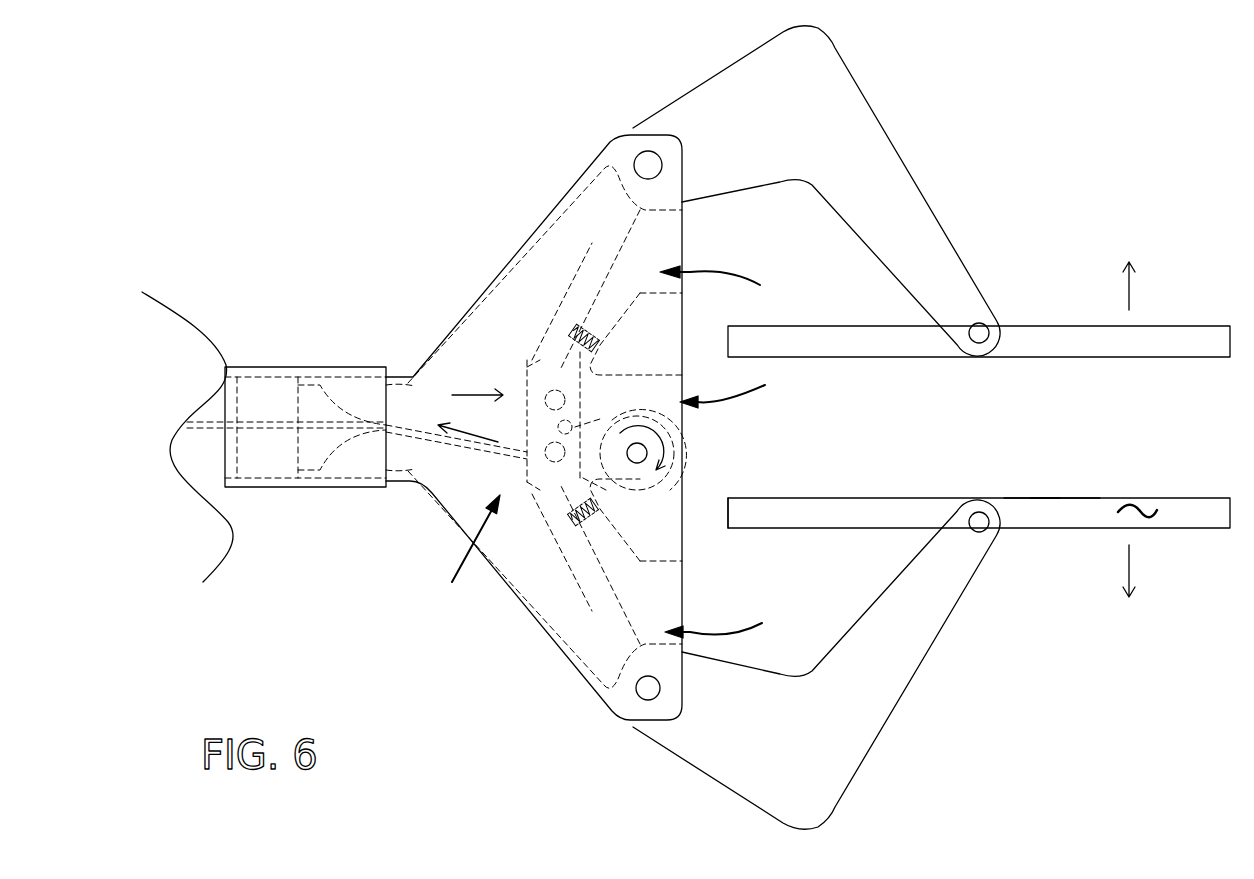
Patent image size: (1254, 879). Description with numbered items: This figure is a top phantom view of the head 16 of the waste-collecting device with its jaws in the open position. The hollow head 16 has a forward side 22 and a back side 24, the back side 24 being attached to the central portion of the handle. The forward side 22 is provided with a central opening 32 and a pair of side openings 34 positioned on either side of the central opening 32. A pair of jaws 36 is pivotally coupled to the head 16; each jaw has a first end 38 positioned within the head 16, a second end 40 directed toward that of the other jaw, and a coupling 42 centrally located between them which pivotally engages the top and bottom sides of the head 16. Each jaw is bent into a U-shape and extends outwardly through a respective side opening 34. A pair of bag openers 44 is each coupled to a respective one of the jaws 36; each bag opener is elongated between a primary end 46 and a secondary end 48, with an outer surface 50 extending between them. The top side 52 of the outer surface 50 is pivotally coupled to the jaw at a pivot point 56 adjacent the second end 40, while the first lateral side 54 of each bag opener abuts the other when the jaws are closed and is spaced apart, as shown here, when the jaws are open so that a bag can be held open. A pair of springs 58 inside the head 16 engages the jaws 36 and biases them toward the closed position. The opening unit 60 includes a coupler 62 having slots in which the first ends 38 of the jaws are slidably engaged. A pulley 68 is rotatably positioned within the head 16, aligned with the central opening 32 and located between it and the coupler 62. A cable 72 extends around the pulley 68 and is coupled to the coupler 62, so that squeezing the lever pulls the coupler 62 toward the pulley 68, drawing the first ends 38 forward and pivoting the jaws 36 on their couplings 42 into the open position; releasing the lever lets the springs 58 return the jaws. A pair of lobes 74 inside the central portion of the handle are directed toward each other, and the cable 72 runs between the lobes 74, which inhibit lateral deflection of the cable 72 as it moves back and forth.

The head 16 is at (582, 177).
The forward side 22 is at (682, 580).
The back side 24 is at (383, 462).
The central opening 32 is at (744, 383).
The side openings 34 is at (739, 452).
The jaws 36 is at (880, 97).
The first end 38 is at (528, 385).
The second end 40 is at (993, 358).
The coupling 42 is at (648, 150).
The bag openers 44 is at (1223, 325).
The primary end 46 is at (730, 515).
The secondary end 48 is at (1230, 515).
The outer surface 50 is at (1125, 507).
The top side 52 is at (1057, 513).
The first lateral side 54 is at (1025, 498).
The pivot point 56 is at (975, 320).
The springs 58 is at (588, 333).
The opening unit 60 is at (464, 505).
The coupler 62 is at (545, 413).
The pulley 68 is at (656, 456).
The cable 72 is at (453, 445).
The lobes 74 is at (392, 443).